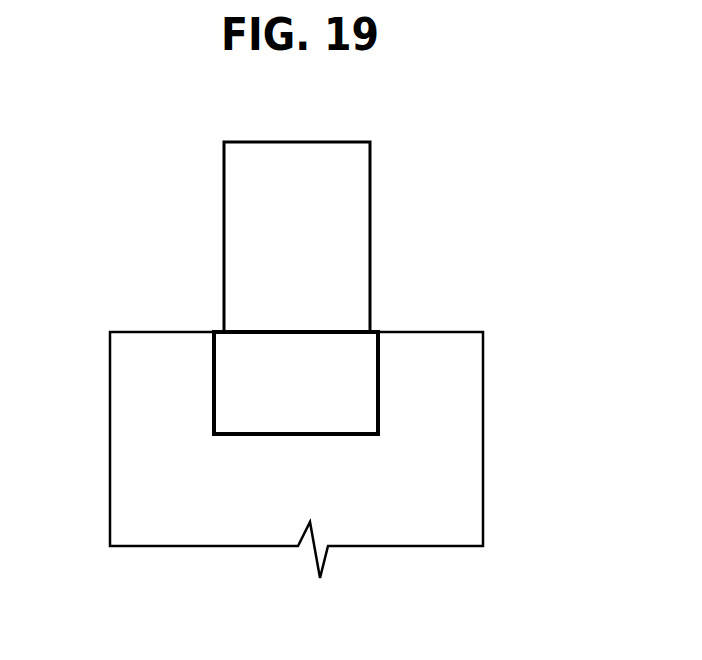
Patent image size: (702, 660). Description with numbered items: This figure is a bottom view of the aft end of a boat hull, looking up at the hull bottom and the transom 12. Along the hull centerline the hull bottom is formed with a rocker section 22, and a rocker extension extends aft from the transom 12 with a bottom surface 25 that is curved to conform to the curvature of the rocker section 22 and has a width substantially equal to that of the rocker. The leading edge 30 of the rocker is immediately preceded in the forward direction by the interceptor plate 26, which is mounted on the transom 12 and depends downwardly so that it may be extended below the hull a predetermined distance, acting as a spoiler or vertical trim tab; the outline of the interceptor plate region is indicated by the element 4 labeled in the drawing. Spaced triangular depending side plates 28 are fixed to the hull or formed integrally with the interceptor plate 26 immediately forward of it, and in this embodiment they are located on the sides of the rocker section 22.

The gate electrode / gate structure 4 is at (378, 365).
The transom 12 is at (450, 332).
The rocker section 22 is at (250, 385).
The bottom surface 25 is at (275, 170).
The interceptor plate 26 is at (348, 385).
The side plates 28 is at (143, 419).
The leading edge 30 is at (298, 436).